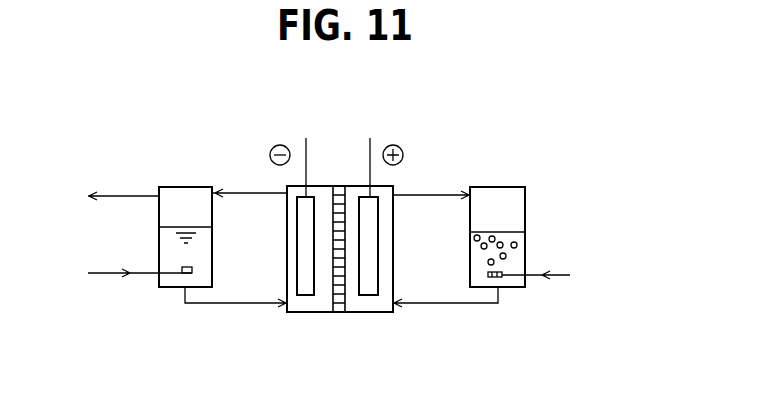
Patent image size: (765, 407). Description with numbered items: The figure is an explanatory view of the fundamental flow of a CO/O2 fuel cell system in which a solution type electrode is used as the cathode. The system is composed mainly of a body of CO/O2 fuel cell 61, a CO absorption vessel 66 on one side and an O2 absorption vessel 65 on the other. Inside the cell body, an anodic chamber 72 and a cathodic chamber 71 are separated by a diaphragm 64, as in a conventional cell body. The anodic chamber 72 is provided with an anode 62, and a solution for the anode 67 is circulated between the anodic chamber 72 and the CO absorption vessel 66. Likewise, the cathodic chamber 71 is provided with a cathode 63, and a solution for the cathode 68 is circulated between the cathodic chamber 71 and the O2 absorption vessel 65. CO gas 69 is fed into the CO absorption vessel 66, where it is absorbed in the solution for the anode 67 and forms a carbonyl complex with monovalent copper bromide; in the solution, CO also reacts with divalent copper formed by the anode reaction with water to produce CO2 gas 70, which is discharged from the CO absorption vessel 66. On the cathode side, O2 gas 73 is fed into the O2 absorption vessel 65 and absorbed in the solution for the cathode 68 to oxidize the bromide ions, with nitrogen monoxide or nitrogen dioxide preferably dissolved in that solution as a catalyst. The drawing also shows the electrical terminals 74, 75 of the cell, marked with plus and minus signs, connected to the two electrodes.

The body of CO/O2 fuel cell 61 is at (287, 186).
The anode 62 is at (302, 291).
The cathode 63 is at (377, 293).
The diaphragm 64 is at (339, 312).
The O2 absorption vessel 65 is at (512, 187).
The CO absorption vessel 66 is at (159, 187).
The solution for the anode 67 is at (226, 303).
The solution for the cathode 68 is at (470, 303).
The CO gas 69 is at (123, 273).
The CO2 gas 70 is at (106, 196).
The cathodic chamber 71 is at (365, 298).
The anodic chamber 72 is at (310, 312).
The O2 gas 73 is at (542, 275).
The positive terminal 74 is at (370, 152).
The negative terminal 75 is at (306, 150).